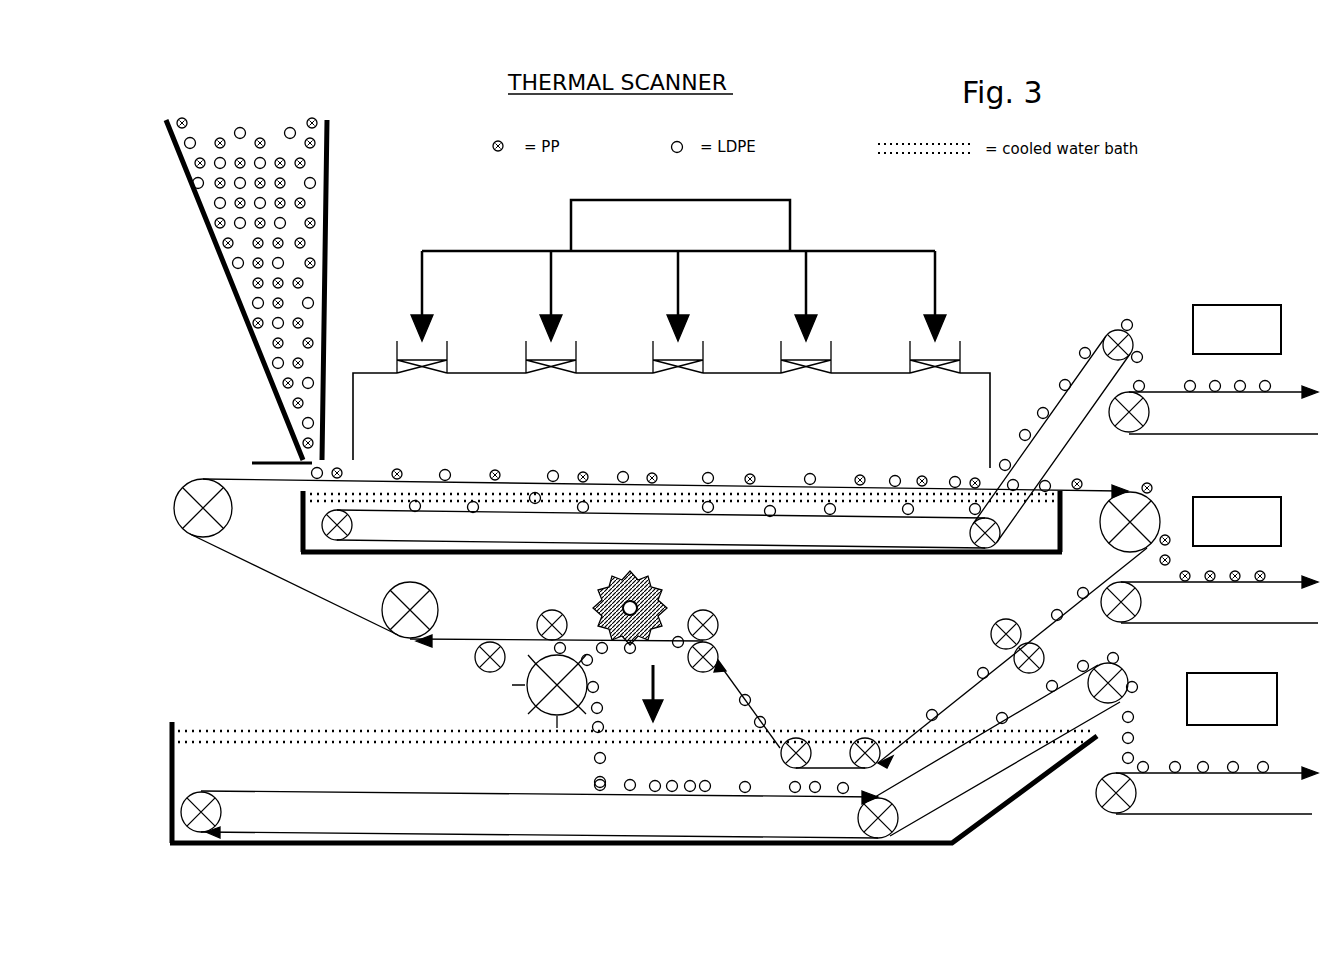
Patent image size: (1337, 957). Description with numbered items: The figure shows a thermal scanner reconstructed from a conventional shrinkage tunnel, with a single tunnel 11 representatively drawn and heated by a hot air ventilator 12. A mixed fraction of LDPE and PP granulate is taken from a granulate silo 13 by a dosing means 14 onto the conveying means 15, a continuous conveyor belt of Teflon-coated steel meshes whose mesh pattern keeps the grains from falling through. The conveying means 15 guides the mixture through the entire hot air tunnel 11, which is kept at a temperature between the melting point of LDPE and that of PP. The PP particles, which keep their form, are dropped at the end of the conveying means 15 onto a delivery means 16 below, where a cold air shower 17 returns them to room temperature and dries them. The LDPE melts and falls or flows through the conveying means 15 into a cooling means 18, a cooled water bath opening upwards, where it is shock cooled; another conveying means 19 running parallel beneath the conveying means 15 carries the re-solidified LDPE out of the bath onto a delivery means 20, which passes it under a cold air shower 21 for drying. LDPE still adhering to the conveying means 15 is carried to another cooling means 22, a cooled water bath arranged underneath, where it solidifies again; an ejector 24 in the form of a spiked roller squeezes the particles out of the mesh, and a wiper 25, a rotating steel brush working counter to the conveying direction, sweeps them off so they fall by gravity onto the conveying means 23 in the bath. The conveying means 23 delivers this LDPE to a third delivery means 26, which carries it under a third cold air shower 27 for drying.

The tunnel 11 is at (950, 418).
The hot air ventilator 12 is at (678, 270).
The granulate silo 13 is at (327, 218).
The dosing means 14 is at (275, 460).
The conveying means 15 is at (235, 563).
The delivery means 16 is at (1177, 623).
The cold air shower 17 is at (1190, 524).
The cooling means 18 is at (941, 566).
The conveying means 19 is at (893, 562).
The delivery means 20 is at (1177, 432).
The cold air shower 21 is at (1237, 329).
The cooling means 22 is at (970, 842).
The conveying means 23 is at (433, 790).
The ejector 24 is at (671, 588).
The wiper 25 is at (525, 690).
The delivery means 26 is at (1172, 813).
The cold air shower 27 is at (1232, 699).